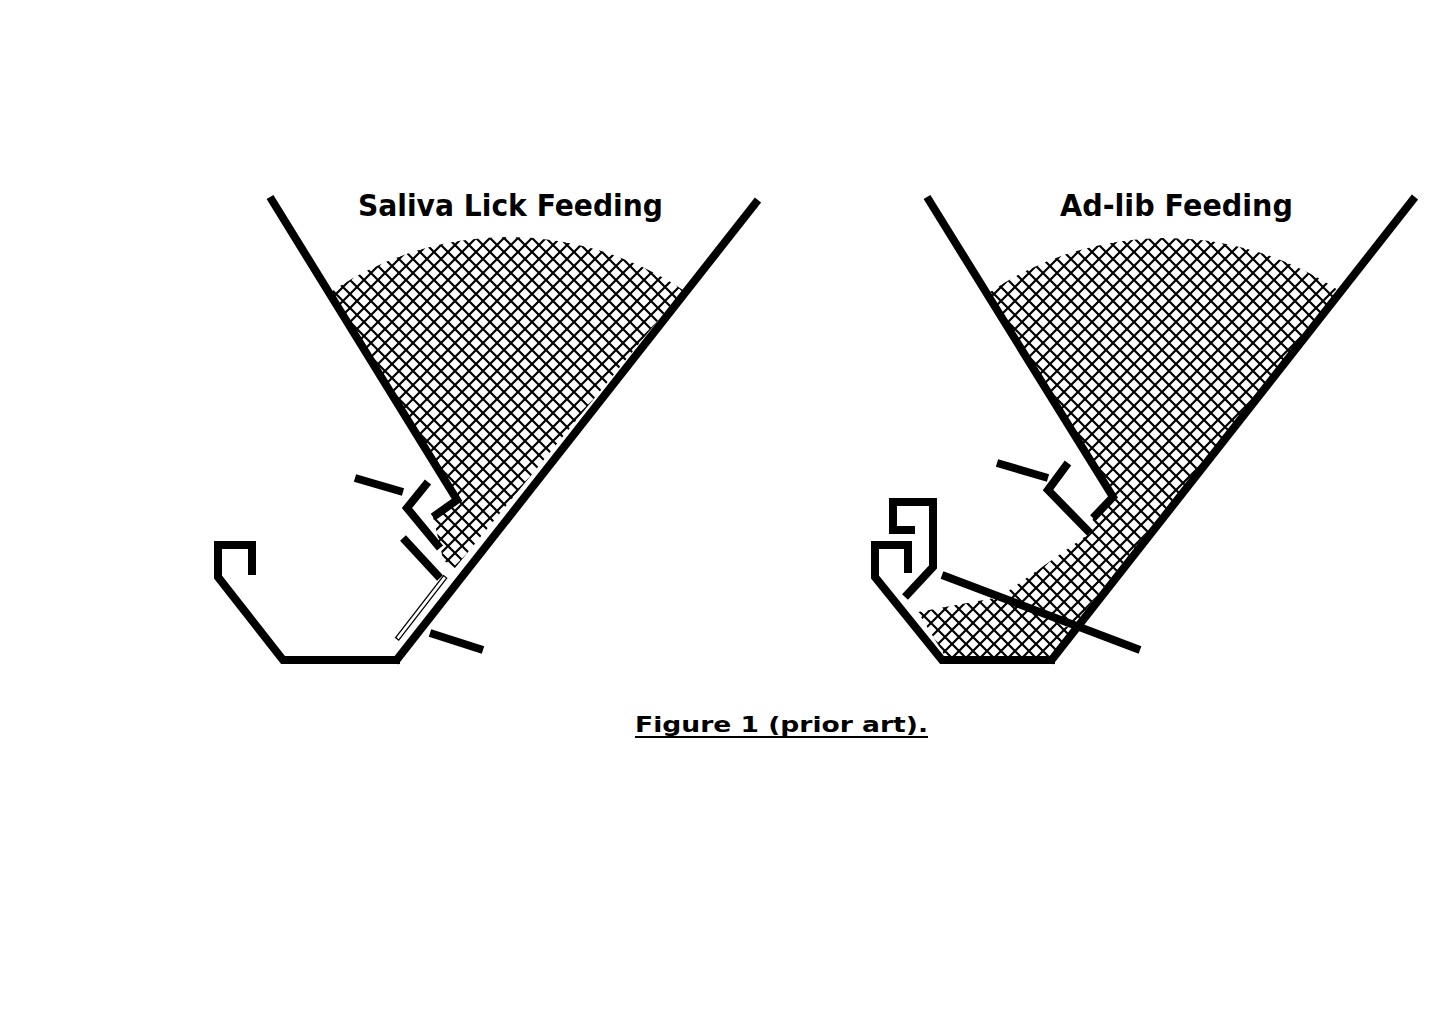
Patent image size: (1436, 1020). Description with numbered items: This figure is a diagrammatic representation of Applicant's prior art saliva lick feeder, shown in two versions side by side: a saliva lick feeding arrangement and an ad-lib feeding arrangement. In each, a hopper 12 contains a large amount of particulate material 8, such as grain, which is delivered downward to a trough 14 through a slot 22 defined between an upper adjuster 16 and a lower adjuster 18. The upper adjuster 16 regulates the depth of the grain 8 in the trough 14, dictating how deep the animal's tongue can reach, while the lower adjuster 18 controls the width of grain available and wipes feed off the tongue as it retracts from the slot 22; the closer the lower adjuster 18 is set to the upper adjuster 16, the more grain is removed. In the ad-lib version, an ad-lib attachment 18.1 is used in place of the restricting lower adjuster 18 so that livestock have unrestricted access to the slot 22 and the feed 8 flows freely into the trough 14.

The hopper 12 is at (458, 140).
The particulate material 8 is at (373, 268).
The upper adjuster 16 is at (426, 482).
The trough 14 is at (285, 538).
The lower adjuster 18 is at (410, 552).
The slot 22 is at (420, 540).
The ad-lib attachment 18.1 is at (893, 513).